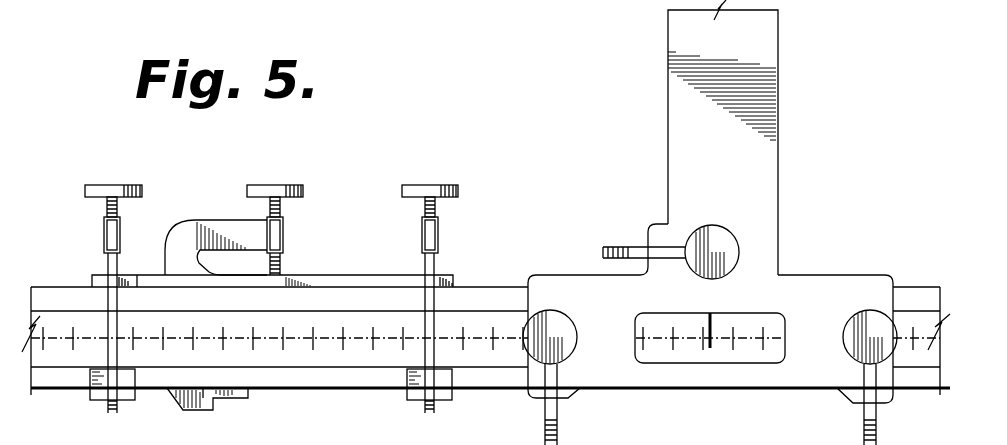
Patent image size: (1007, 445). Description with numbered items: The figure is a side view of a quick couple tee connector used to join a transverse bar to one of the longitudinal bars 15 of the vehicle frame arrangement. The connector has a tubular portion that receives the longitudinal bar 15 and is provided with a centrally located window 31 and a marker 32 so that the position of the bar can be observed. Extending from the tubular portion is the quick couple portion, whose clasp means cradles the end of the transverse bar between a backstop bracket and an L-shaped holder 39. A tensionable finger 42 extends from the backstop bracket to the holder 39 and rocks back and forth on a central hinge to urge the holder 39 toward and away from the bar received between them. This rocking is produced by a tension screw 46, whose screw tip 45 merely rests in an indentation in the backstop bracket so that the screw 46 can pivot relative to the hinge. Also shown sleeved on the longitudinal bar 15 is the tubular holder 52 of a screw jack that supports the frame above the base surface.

The longitudinal bar 15 is at (478, 288).
The window 31 is at (740, 314).
The marker 32 is at (705, 314).
The L-shaped holder 39 is at (134, 401).
The tensionable finger 42 is at (106, 263).
The screw tip 45 is at (284, 276).
The tension screw 46 is at (110, 186).
The tubular holder 52 is at (780, 218).